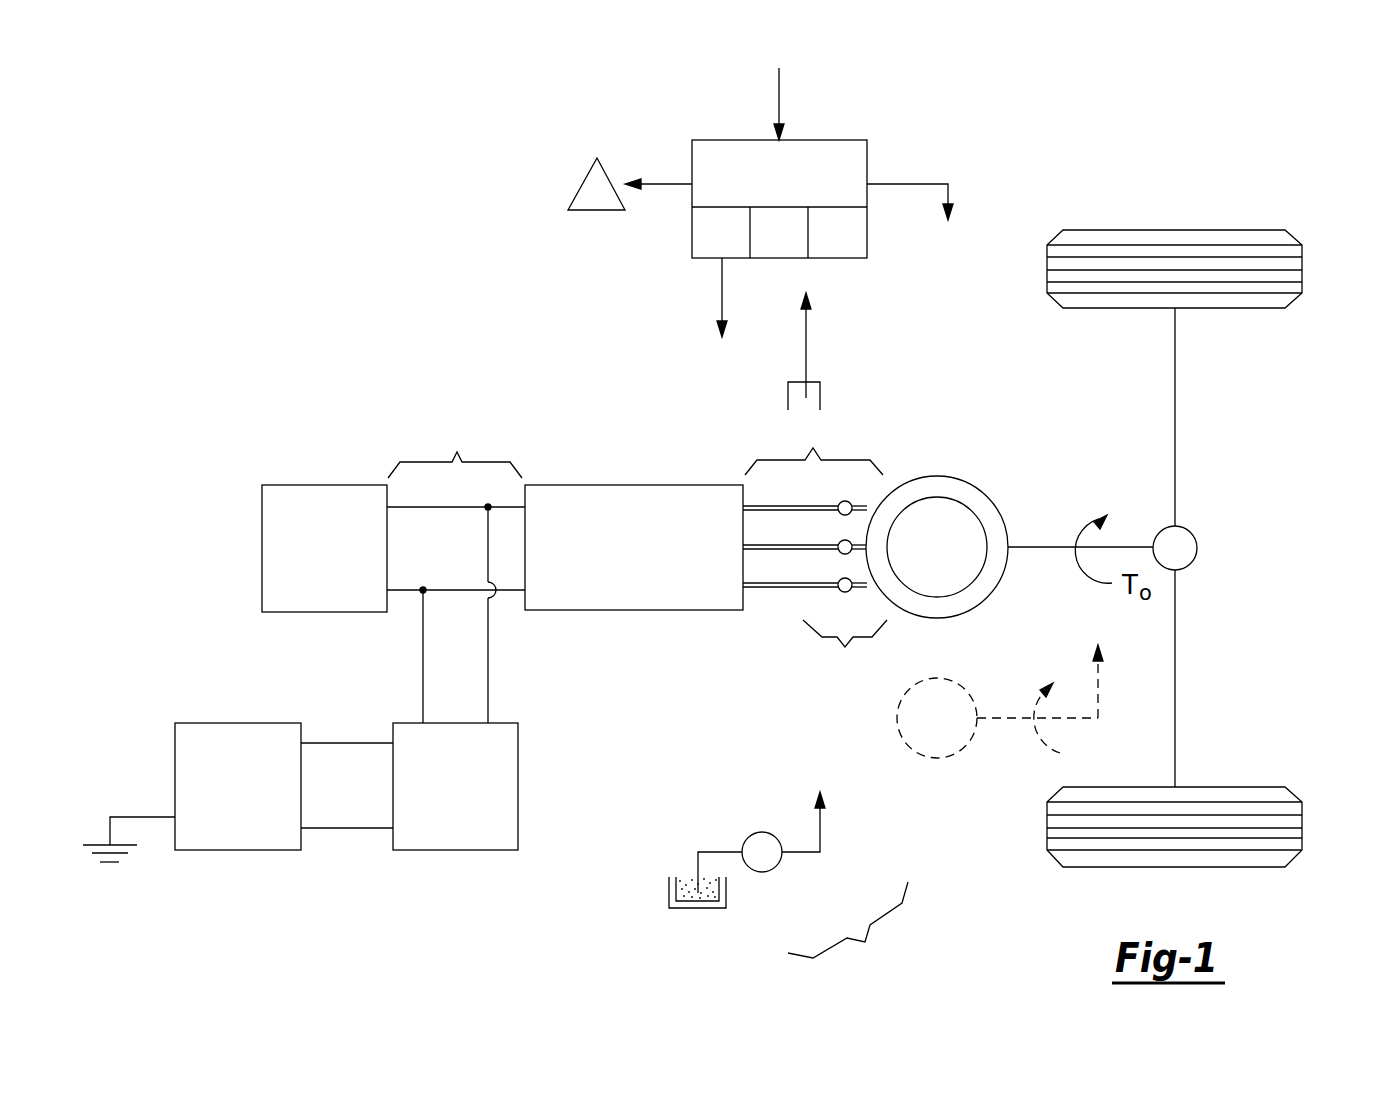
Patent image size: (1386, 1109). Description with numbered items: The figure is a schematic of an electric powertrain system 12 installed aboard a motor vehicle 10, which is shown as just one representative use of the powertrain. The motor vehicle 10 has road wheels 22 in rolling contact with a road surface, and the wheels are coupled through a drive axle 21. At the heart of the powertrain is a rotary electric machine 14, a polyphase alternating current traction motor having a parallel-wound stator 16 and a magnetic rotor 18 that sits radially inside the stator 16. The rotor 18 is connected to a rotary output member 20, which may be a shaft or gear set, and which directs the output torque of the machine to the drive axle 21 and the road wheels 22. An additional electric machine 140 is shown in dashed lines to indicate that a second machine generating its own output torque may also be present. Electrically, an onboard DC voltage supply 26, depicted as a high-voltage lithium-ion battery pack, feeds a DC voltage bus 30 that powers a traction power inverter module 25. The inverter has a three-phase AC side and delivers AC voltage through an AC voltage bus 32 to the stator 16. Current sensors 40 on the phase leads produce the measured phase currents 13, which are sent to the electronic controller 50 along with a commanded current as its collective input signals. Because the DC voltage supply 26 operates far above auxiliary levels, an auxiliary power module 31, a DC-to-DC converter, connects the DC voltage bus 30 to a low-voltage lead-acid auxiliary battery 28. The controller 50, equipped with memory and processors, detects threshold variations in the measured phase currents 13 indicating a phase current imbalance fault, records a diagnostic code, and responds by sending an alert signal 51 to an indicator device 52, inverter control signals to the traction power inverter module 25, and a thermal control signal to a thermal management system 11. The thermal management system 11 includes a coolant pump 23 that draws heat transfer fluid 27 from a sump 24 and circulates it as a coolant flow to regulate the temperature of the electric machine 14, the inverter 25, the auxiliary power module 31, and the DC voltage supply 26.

The motor vehicle 10 is at (1222, 124).
The thermal management system 11 is at (848, 925).
The electric powertrain system 12 is at (600, 384).
The measured phase currents 13 is at (806, 357).
The rotary electric machine 14 is at (1020, 425).
The parallel-wound stator 16 is at (935, 476).
The magnetic rotor 18 is at (973, 512).
The rotary output member 20 is at (1033, 550).
The drive axle 21 is at (1177, 680).
The road wheels 22 is at (1302, 268).
The coolant pump 23 is at (762, 832).
The sump 24 is at (697, 908).
The traction power inverter module 25 is at (635, 485).
The DC voltage supply 26 is at (325, 485).
The heat transfer fluid 27 is at (685, 880).
The auxiliary battery 28 is at (238, 850).
The DC voltage bus 30 is at (456, 569).
The auxiliary power module 31 is at (457, 850).
The AC voltage bus 32 is at (801, 506).
The current sensors 40 is at (845, 593).
The electronic controller 50 is at (712, 140).
The alert signal 51 is at (648, 182).
The indicator device 52 is at (578, 185).
The additional electric machine 140 is at (980, 676).